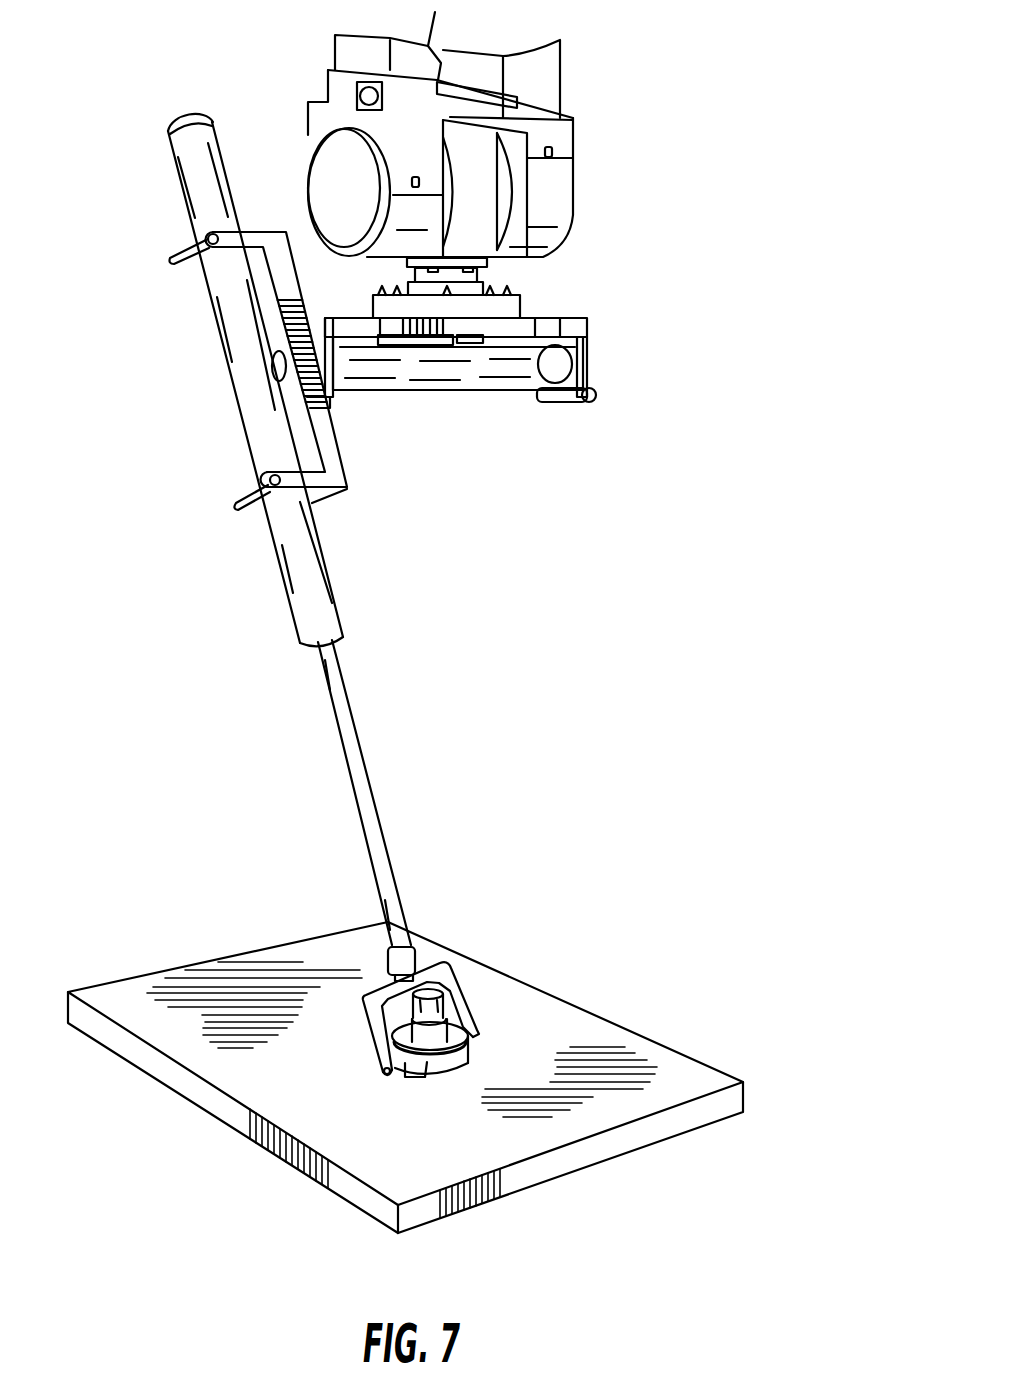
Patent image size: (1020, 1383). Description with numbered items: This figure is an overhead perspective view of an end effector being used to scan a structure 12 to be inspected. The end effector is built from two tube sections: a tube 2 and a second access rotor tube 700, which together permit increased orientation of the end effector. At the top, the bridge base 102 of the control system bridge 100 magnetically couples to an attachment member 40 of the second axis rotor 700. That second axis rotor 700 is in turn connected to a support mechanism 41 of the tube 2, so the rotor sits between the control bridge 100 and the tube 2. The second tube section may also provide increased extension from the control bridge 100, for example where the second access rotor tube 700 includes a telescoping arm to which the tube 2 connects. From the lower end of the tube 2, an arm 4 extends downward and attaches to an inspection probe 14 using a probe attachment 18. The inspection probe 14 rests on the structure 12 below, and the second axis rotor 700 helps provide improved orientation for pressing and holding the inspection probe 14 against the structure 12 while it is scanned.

The tube 2 is at (237, 312).
The arm 4 is at (345, 768).
The structure 12 is at (542, 1028).
The inspection probe 14 is at (422, 1063).
The probe attachment 18 is at (377, 997).
The attachment member 40 is at (520, 325).
The support mechanism 41 is at (280, 237).
The control bridge 100 is at (552, 190).
The bridge base 102 is at (520, 313).
The second access rotor tube 700 is at (460, 373).